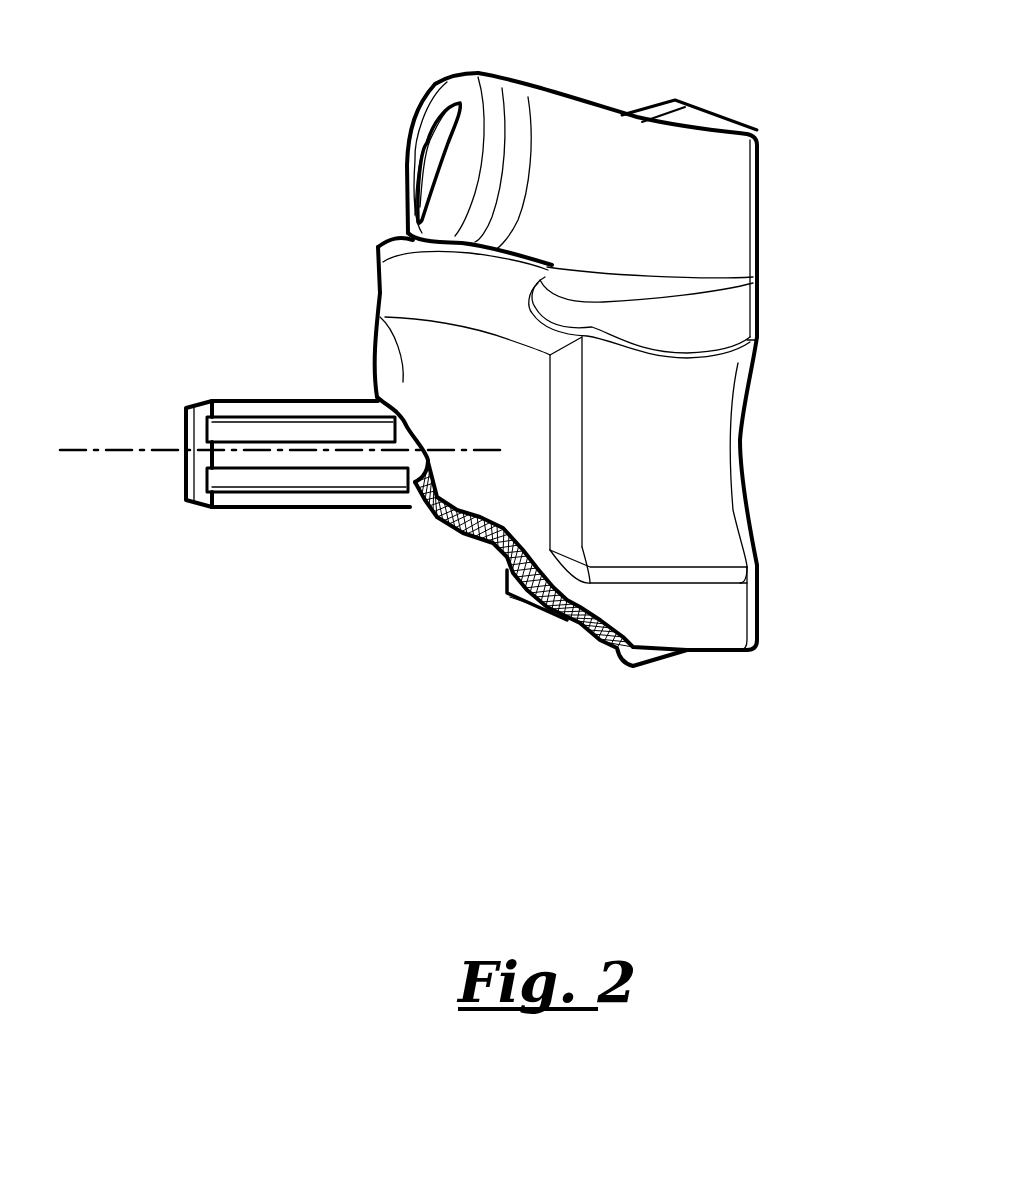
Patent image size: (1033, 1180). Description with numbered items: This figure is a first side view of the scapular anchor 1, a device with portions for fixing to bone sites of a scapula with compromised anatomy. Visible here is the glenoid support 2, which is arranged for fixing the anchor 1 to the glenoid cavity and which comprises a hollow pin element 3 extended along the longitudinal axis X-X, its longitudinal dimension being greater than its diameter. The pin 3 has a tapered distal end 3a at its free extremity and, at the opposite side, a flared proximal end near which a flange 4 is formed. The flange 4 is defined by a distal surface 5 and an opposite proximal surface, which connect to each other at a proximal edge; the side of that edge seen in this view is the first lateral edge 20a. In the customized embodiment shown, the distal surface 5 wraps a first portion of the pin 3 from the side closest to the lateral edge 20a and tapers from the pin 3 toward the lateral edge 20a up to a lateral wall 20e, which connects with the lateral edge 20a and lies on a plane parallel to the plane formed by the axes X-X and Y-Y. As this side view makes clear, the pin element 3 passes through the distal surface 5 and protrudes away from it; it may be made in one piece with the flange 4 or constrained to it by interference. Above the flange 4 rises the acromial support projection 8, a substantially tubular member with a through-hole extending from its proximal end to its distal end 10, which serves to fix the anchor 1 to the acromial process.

The anchor 1 is at (202, 783).
The glenoid support 2 is at (380, 603).
The pin element 3 is at (288, 400).
The tapered distal end 3a is at (193, 450).
The flange 4 is at (372, 252).
The distal surface 5 is at (403, 382).
The acromial support projection 8 is at (583, 100).
The distal end 10 is at (408, 148).
The first lateral edge 20a is at (738, 442).
The lateral wall 20e is at (665, 492).